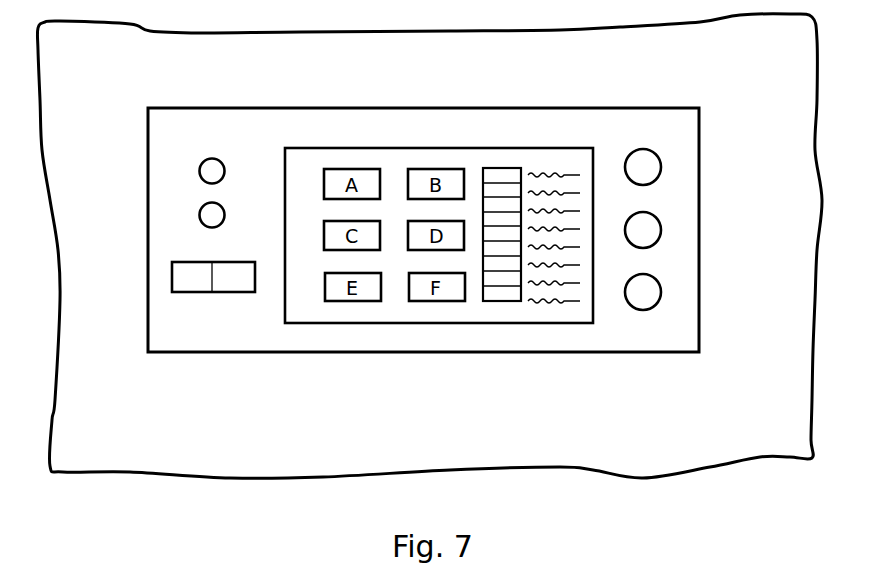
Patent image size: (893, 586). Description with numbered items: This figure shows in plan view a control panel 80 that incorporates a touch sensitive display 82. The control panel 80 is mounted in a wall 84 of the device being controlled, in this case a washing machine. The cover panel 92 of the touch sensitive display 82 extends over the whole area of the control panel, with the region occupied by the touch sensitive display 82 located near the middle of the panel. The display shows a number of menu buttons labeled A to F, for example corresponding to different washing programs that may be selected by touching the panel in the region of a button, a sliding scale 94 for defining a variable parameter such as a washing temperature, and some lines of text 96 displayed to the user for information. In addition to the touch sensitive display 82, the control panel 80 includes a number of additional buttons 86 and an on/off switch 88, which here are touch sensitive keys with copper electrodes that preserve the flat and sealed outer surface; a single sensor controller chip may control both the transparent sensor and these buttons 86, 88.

The control panel 80 is at (352, 108).
The touch sensitive display 82 is at (513, 323).
The wall 84 is at (137, 446).
The additional buttons 86 is at (199, 215).
The on/off switch 88 is at (172, 278).
The cover panel 92 is at (202, 345).
The sliding scale 94 is at (502, 168).
The lines of text 96 is at (553, 175).